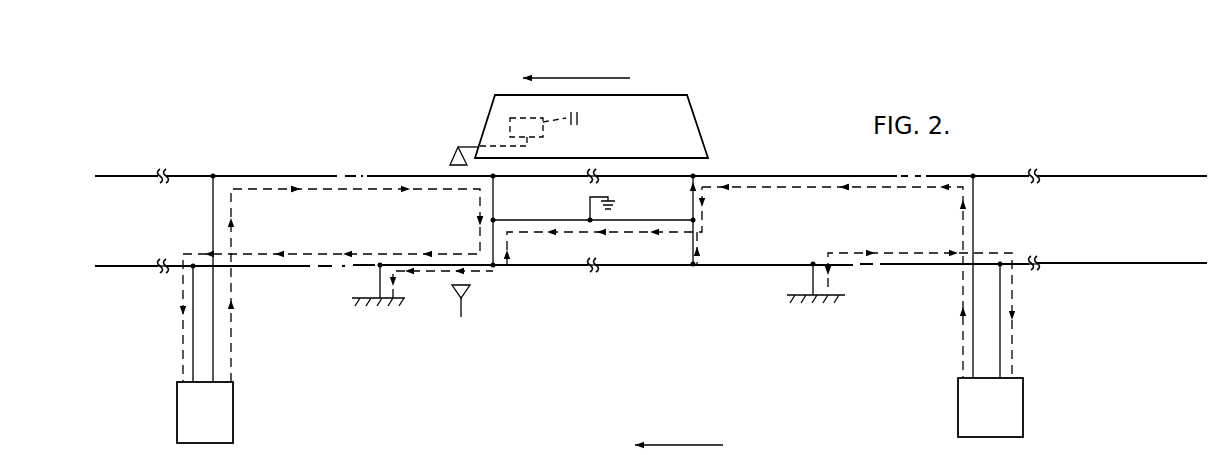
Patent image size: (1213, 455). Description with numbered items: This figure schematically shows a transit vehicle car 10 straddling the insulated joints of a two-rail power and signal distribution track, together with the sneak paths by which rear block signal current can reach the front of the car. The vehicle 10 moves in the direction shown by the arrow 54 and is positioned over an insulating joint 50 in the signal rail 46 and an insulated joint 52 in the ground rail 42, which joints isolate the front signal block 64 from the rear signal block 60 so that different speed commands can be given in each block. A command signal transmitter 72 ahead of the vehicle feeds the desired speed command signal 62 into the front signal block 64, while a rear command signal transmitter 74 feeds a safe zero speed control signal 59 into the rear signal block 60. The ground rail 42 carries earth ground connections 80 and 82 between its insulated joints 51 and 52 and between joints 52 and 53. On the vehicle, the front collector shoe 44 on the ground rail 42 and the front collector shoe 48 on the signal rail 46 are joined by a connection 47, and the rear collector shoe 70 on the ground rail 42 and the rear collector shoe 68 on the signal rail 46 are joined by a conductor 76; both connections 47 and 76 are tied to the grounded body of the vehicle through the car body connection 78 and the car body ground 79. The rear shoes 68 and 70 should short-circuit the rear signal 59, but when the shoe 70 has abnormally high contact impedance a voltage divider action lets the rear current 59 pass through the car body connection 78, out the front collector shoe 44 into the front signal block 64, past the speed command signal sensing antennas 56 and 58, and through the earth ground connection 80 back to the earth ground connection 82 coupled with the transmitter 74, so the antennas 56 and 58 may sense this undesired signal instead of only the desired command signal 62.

The vehicle car 10 is at (676, 131).
The ground rail 42 is at (306, 268).
The front collector shoe 44 is at (497, 267).
The signal rail 46 is at (313, 175).
The connection 47 is at (497, 212).
The front collector shoe 48 is at (484, 187).
The insulating joint 50 is at (595, 178).
The insulated joint 51 is at (160, 270).
The insulated joint 52 is at (591, 268).
The insulated joint 53 is at (1040, 270).
The arrow 54 is at (630, 78).
The speed command signal sensing antenna 56 is at (454, 159).
The speed command signal sensing antenna 58 is at (454, 290).
The control signal 59 is at (848, 188).
The rear signal block 60 is at (762, 232).
The command signal 62 is at (289, 193).
The signal block 64 is at (345, 230).
The rear collector shoe 68 is at (690, 184).
The rear collector shoe 70 is at (690, 260).
The command signal transmitter 72 is at (233, 422).
The rear command signal transmitter 74 is at (1025, 416).
The conductor 76 is at (686, 199).
The car body connection 78 is at (556, 218).
The car body ground 79 is at (583, 230).
The earth ground connection 80 is at (377, 268).
The earth ground connection 82 is at (810, 269).